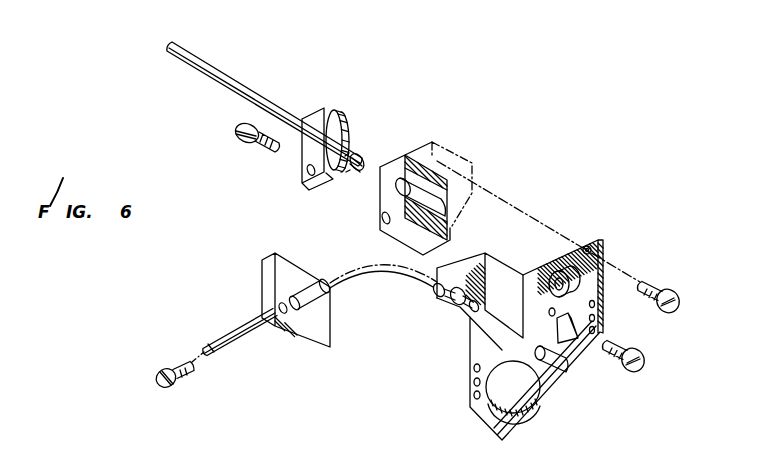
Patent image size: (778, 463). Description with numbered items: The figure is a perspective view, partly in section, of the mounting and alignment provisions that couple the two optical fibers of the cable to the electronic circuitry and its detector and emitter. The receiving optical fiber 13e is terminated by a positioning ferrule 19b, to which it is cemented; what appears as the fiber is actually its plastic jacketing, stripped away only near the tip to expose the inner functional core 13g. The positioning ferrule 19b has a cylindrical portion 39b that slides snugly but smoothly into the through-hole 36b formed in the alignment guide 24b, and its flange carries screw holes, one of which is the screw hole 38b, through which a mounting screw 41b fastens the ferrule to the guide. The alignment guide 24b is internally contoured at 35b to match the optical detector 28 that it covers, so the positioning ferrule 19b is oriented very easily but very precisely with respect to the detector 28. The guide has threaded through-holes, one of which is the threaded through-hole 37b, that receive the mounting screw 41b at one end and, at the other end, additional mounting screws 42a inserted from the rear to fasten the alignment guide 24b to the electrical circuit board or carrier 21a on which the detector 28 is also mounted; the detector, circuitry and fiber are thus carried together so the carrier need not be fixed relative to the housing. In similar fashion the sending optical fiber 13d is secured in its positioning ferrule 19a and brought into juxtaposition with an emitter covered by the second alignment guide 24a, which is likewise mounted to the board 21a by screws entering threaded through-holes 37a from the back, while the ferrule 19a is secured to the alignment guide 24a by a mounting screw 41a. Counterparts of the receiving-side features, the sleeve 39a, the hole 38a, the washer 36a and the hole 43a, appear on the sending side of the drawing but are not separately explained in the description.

The receiving optical fiber 13e is at (193, 56).
The positioning ferrule 19b is at (313, 118).
The screw hole 38b is at (304, 171).
The cylindrical portion 39b is at (343, 148).
The inner functional core 13g is at (363, 158).
The mounting screw 41b is at (240, 136).
The alignment guide 24b is at (400, 155).
The through-hole 36b is at (397, 190).
The threaded through-hole 37b is at (383, 221).
The internal contour 35b is at (442, 200).
The electrical circuit board or carrier 21a is at (547, 418).
The optical detector 28 is at (554, 268).
The hole 43a is at (606, 268).
The mounting screw 42a is at (682, 299).
The alignment guide 24a is at (487, 336).
The washer 36a is at (447, 286).
The threaded through-hole 37a is at (452, 304).
The positioning ferrule 19a is at (316, 347).
The hole 38a is at (290, 320).
The sending optical fiber 13d is at (233, 330).
The sleeve 39a is at (332, 300).
The mounting screw 41a is at (168, 392).